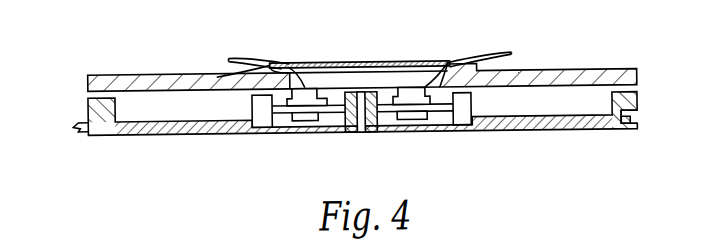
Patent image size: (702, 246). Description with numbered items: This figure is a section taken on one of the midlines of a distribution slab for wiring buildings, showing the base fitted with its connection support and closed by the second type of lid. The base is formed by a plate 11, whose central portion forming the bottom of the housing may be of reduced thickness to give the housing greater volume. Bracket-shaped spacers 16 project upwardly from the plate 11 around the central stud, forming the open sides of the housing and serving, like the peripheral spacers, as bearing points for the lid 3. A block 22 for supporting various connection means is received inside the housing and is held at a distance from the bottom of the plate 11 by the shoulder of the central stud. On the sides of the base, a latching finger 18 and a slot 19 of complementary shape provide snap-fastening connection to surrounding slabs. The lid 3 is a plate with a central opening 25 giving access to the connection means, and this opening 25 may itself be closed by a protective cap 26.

The lid 3 is at (86, 79).
The plate 11 is at (184, 128).
The bracket-shaped spacers 16 is at (263, 116).
The latching finger 18 is at (83, 128).
The slot 19 is at (638, 122).
The block 22 is at (441, 108).
The opening 25 is at (331, 80).
The protective cap 26 is at (421, 63).